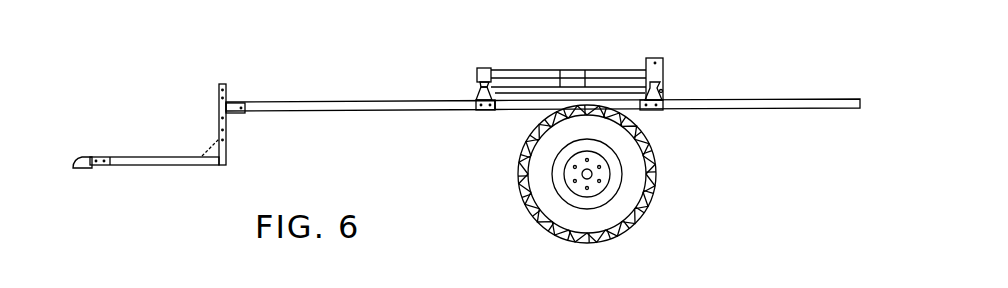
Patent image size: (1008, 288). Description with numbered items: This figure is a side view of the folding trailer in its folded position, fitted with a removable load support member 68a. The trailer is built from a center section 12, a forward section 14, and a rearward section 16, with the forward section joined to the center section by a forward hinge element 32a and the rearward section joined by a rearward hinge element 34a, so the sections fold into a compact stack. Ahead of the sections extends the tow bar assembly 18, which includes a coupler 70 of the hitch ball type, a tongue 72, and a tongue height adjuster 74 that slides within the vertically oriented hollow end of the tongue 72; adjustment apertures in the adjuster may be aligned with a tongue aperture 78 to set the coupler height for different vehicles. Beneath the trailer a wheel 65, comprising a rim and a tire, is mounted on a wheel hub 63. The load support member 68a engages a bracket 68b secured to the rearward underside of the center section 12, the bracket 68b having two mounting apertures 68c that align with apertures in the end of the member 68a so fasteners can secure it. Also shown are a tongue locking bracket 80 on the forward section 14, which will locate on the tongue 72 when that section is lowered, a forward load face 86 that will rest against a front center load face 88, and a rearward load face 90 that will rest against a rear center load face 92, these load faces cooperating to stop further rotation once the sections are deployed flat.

The center section 12 is at (513, 106).
The forward section 14 is at (592, 63).
The rearward section 16 is at (226, 86).
The tow bar assembly 18 is at (300, 150).
The forward hinge element 32a is at (481, 62).
The rearward hinge element 34a is at (680, 74).
The wheel hub 63 is at (587, 174).
The wheel 65 is at (600, 223).
The removable load support member 68a is at (762, 108).
The bracket 68b is at (651, 109).
The mounting apertures 68c is at (660, 109).
The coupler 70 is at (77, 158).
The tongue 72 is at (318, 104).
The tongue height adjuster 74 is at (200, 117).
The tongue aperture 78 is at (232, 112).
The tongue locking bracket 80 is at (665, 60).
The forward load face 86 is at (477, 77).
The front center load face 88 is at (476, 98).
The rearward load face 90 is at (668, 81).
The rear center load face 92 is at (667, 93).